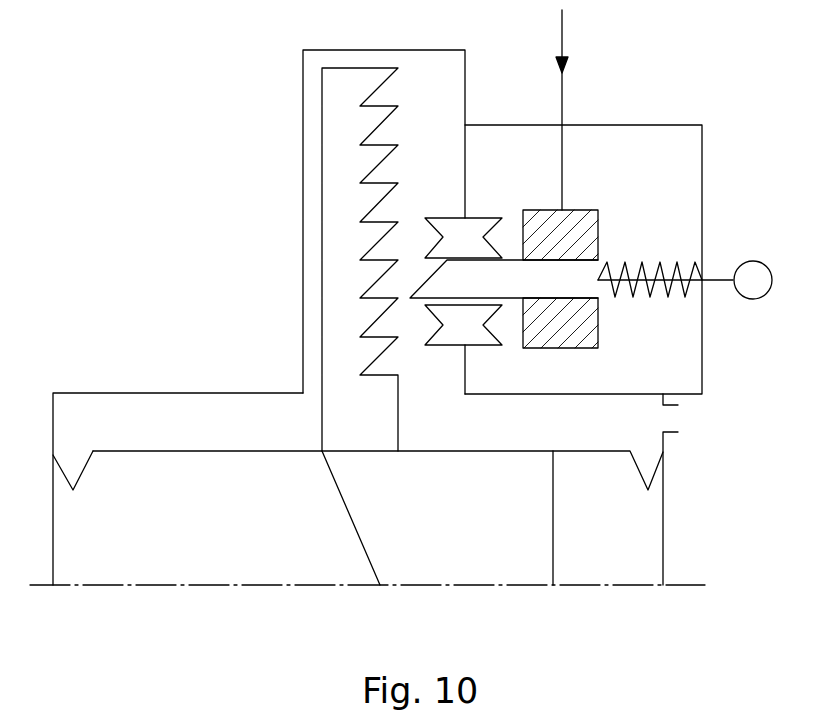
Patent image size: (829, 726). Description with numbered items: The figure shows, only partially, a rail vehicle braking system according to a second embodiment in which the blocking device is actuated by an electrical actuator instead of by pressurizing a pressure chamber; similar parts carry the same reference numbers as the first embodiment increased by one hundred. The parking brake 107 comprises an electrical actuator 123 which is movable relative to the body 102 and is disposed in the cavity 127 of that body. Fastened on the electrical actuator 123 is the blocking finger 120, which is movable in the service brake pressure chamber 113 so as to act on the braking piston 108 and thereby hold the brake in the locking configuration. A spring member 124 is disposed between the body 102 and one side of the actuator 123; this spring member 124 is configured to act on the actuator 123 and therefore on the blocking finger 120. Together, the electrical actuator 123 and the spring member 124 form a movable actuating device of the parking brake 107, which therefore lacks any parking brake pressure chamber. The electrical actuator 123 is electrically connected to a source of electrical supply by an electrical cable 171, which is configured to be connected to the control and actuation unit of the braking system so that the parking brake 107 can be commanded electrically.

The body 102 is at (465, 83).
The parking brake 107 is at (158, 228).
The braking piston 108 is at (147, 450).
The service brake pressure chamber 113 is at (248, 418).
The blocking finger 120 is at (522, 287).
The electrical actuator 123 is at (573, 342).
The spring member 124 is at (645, 262).
The cavity 127 is at (515, 140).
The electrical cable 171 is at (562, 42).